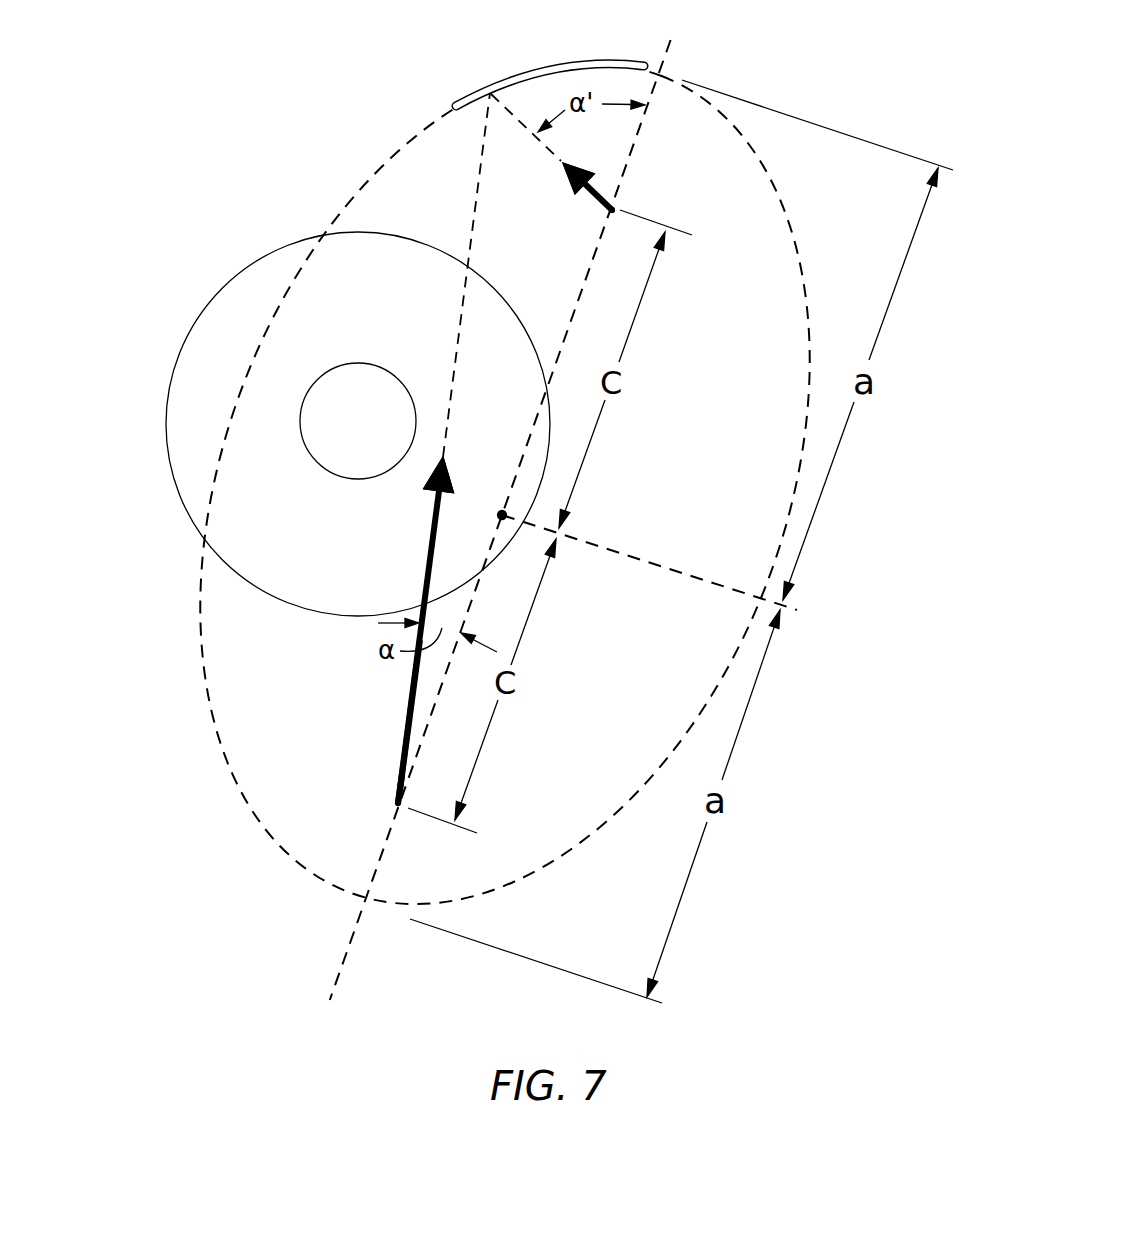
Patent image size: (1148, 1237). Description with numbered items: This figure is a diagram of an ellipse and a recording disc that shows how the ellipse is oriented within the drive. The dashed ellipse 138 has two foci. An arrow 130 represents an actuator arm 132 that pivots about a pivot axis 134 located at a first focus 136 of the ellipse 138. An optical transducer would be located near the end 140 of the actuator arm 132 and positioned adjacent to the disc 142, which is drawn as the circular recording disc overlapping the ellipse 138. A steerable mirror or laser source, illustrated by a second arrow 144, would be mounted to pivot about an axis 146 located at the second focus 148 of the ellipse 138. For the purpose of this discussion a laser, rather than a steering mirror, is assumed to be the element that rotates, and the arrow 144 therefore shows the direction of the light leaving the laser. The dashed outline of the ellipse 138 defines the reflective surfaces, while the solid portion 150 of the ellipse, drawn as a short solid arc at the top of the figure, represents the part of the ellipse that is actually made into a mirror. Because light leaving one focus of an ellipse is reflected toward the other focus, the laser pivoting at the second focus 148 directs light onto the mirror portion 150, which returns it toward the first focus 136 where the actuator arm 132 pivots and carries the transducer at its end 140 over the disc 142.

The arrow 130 is at (405, 690).
The actuator arm 132 is at (402, 733).
The pivot axis 134 is at (395, 803).
The first focus 136 is at (400, 806).
The ellipse 138 is at (248, 807).
The end of the actuator arm 140 is at (447, 462).
The disc 142 is at (190, 468).
The arrow 144 is at (598, 198).
The axis 146 is at (615, 206).
The second focus 148 is at (616, 211).
The solid portion of the ellipse 150 is at (536, 62).